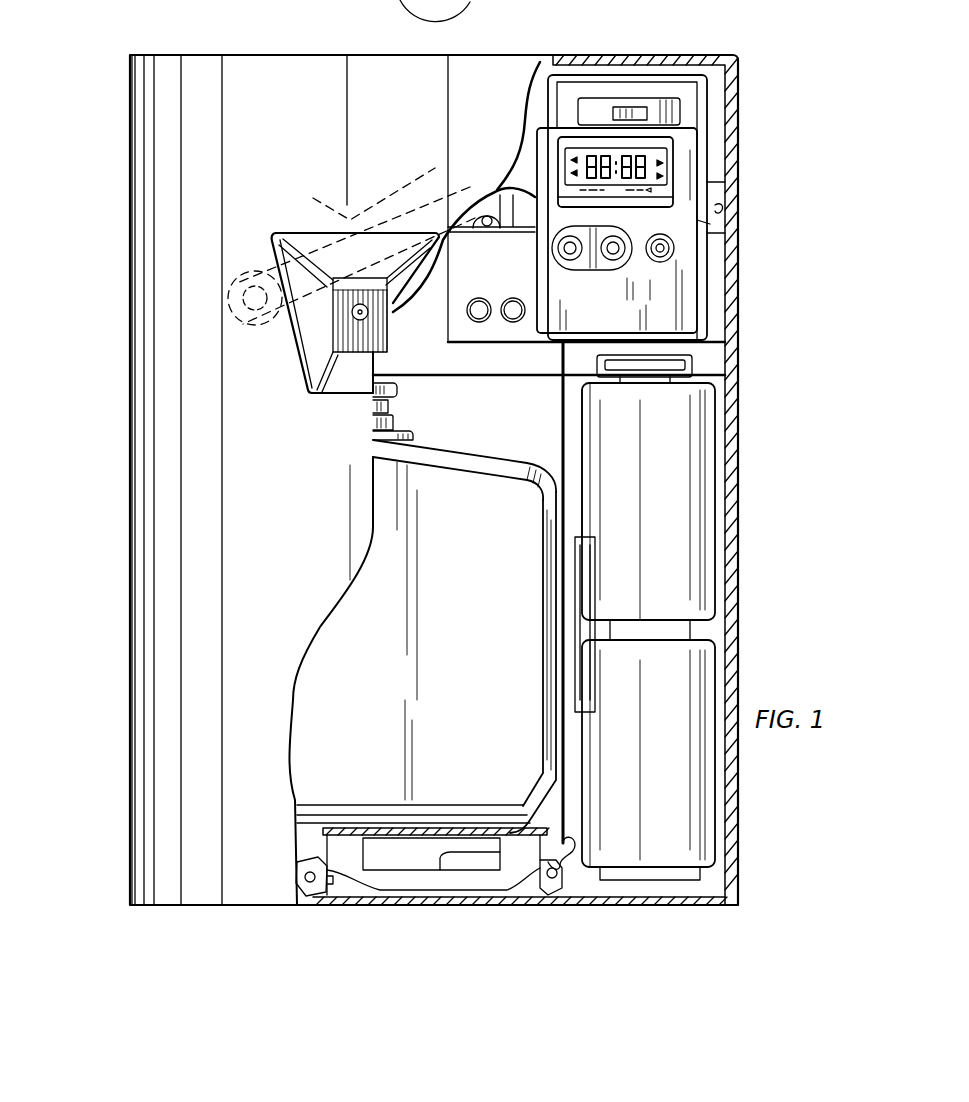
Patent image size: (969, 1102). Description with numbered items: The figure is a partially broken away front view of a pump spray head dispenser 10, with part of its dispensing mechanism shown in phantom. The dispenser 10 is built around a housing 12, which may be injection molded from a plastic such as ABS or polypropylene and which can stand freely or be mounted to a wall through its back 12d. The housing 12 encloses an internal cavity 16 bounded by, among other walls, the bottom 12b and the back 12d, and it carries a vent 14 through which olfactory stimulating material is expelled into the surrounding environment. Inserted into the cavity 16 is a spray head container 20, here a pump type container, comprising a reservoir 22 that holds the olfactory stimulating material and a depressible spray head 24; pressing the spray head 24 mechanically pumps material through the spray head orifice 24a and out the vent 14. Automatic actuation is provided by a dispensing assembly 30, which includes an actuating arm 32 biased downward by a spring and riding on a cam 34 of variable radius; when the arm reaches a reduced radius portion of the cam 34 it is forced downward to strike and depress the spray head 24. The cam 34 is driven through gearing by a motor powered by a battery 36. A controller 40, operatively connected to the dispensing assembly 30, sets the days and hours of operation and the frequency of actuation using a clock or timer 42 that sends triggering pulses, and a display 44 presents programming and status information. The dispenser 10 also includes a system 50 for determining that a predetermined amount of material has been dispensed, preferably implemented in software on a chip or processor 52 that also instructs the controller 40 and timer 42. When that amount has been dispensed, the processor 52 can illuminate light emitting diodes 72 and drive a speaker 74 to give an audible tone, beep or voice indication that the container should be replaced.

The dispenser 10 is at (771, 212).
The housing 12 is at (128, 125).
The bottom 12b is at (313, 903).
The back 12d is at (575, 880).
The vent 14 is at (366, 280).
The internal cavity 16 is at (377, 438).
The spray head container 20 is at (495, 455).
The reservoir 22 is at (476, 577).
The spray head 24 is at (397, 322).
The spray head orifice 24a is at (303, 356).
The dispensing assembly 30 is at (396, 175).
The actuating arm 32 is at (365, 194).
The cam 34 is at (497, 186).
The battery 36 is at (567, 392).
The controller 40 is at (527, 105).
The clock or timer 42 is at (576, 150).
The display 44 is at (612, 150).
The system for determining that a predetermined amount has been dispensed 50 is at (688, 132).
The chip or processor 52 is at (670, 220).
The light emitting diodes 72 is at (512, 300).
The speaker 74 is at (393, 850).